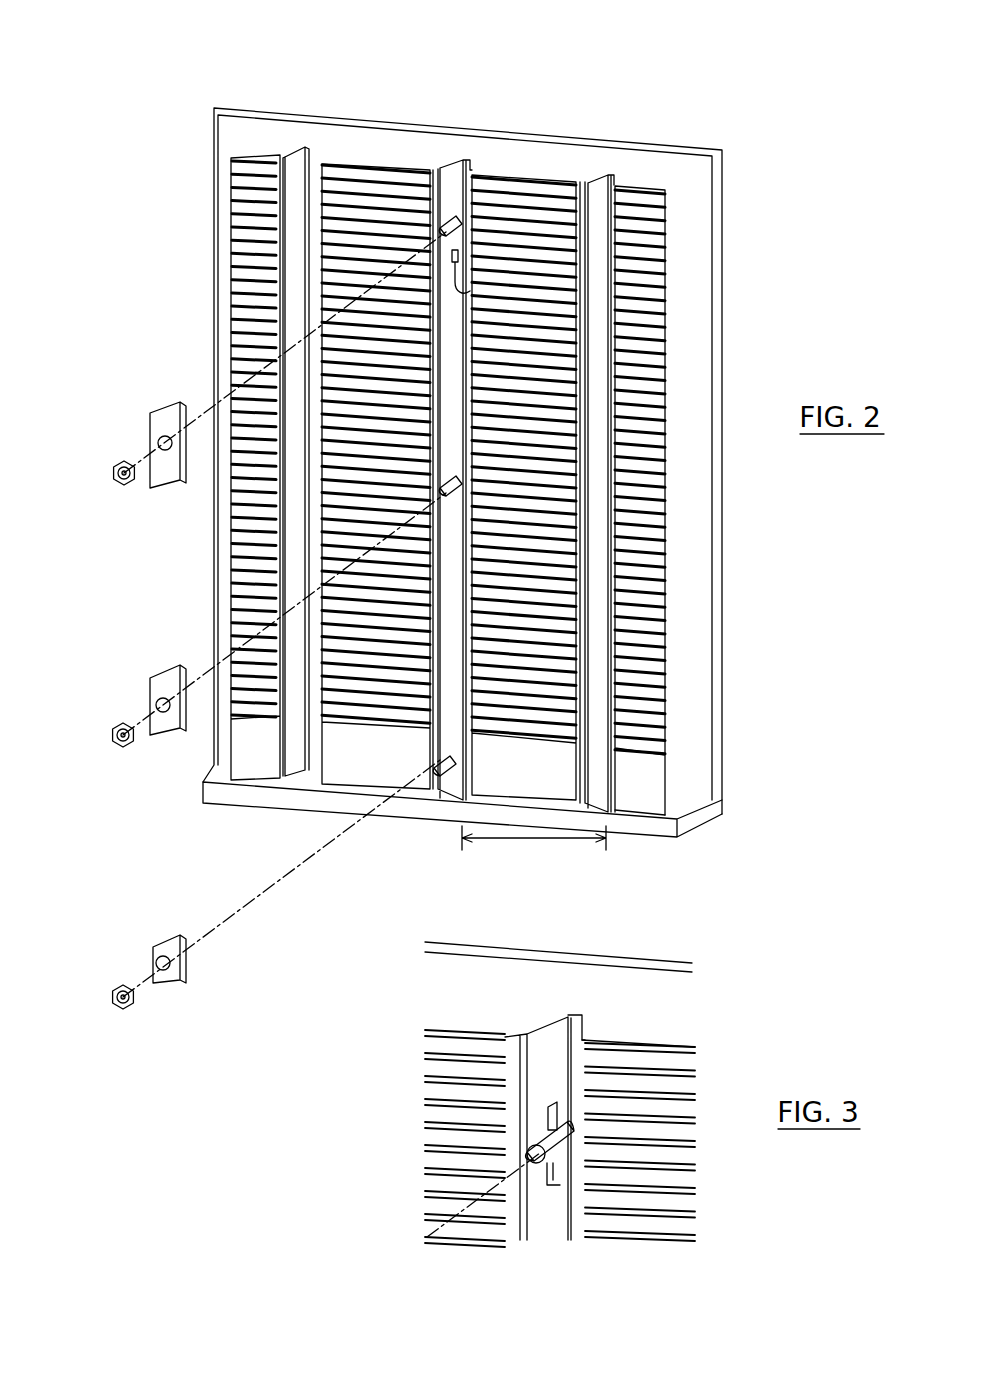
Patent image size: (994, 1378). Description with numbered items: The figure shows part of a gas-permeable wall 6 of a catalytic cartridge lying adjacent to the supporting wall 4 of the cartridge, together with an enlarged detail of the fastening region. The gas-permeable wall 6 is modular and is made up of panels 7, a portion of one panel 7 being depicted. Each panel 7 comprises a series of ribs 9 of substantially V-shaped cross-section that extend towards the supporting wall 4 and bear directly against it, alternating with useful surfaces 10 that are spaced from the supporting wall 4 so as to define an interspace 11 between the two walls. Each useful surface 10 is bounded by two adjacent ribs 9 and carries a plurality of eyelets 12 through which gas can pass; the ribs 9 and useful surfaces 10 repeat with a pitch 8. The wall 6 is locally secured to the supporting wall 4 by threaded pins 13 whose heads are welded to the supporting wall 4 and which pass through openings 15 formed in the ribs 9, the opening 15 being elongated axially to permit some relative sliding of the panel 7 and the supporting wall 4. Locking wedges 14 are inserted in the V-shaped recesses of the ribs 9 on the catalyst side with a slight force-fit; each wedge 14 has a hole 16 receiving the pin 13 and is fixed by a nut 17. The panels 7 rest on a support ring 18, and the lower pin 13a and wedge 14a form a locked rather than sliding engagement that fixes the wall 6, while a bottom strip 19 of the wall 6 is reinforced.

In FIG. 2, the supporting wall 4 is at (700, 258).
In FIG. 3, the supporting wall 4 is at (442, 958).
In FIG. 2, the gas-permeable wall 6 is at (694, 566).
In FIG. 2, the panel 7 is at (401, 137).
In FIG. 2, the repetition pitch 8 is at (548, 843).
In FIG. 2, the rib 9 is at (468, 158).
In FIG. 3, the rib 9 is at (555, 1035).
In FIG. 2, the useful surface 10 is at (542, 193).
In FIG. 3, the useful surface 10 is at (653, 1063).
In FIG. 2, the interspace 11 is at (590, 160).
In FIG. 3, the interspace 11 is at (647, 997).
In FIG. 2, the eyelets 12 is at (352, 195).
In FIG. 3, the eyelets 12 is at (425, 1143).
In FIG. 2, the threaded pin 13 is at (453, 230).
In FIG. 3, the threaded pin 13 is at (538, 1163).
In FIG. 2, the lower threaded pin 13a is at (448, 767).
In FIG. 2, the locking wedge 14 is at (165, 482).
In FIG. 2, the lower locking wedge 14a is at (172, 980).
In FIG. 2, the opening 15 is at (450, 262).
In FIG. 3, the opening 15 is at (562, 1172).
In FIG. 2, the hole 16 is at (157, 440).
In FIG. 2, the nut 17 is at (113, 470).
In FIG. 2, the support ring 18 is at (680, 806).
In FIG. 2, the bottom strip 19 is at (644, 797).